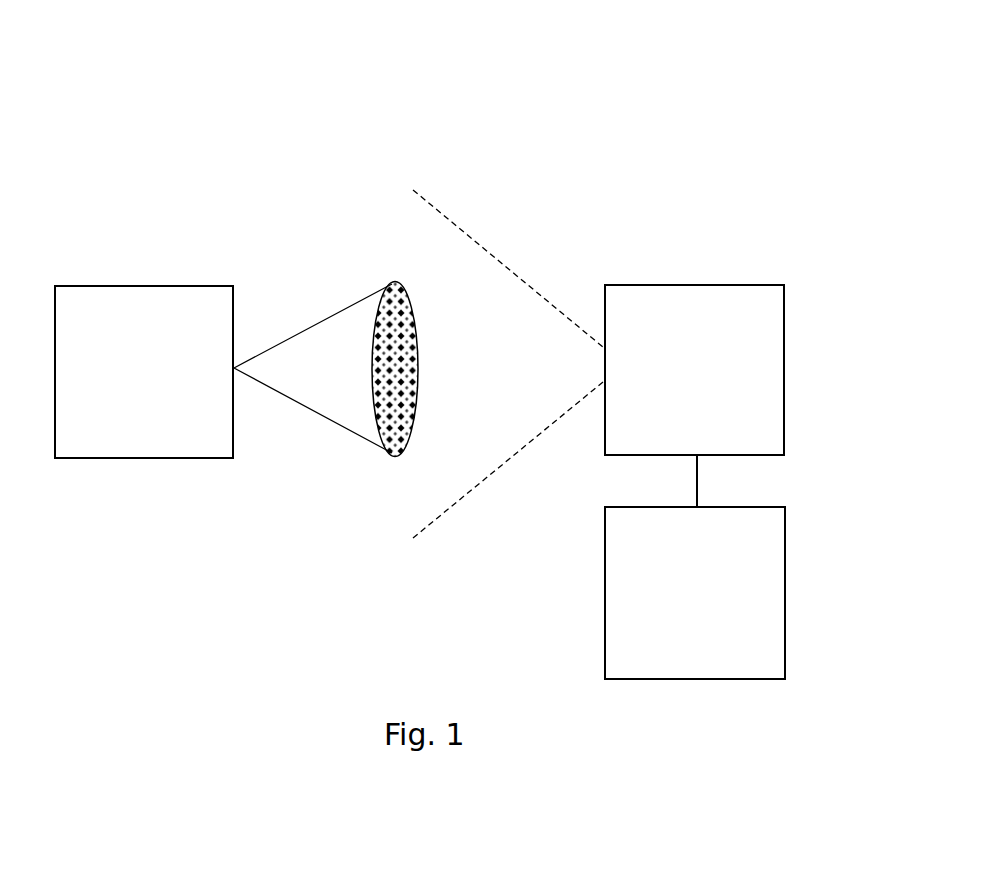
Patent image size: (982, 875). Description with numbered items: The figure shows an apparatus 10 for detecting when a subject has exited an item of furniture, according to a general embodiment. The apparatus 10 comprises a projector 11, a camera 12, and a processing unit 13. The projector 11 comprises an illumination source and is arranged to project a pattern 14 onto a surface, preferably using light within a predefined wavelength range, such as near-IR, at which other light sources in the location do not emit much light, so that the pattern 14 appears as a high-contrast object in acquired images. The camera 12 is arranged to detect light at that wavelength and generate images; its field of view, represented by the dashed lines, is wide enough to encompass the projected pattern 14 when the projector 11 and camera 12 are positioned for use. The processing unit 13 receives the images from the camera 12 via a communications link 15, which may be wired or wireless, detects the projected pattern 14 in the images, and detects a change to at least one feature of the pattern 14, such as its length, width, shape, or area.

The apparatus 10 is at (563, 97).
The projector 11 is at (158, 377).
The camera 12 is at (703, 375).
The processing unit 13 is at (705, 598).
The pattern 14 is at (400, 374).
The communications link 15 is at (698, 489).